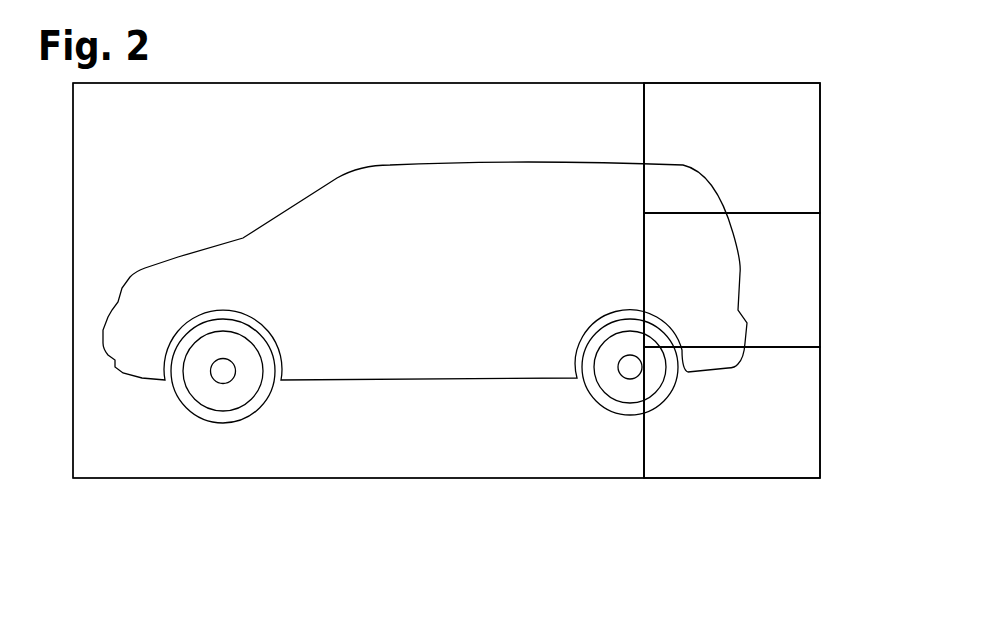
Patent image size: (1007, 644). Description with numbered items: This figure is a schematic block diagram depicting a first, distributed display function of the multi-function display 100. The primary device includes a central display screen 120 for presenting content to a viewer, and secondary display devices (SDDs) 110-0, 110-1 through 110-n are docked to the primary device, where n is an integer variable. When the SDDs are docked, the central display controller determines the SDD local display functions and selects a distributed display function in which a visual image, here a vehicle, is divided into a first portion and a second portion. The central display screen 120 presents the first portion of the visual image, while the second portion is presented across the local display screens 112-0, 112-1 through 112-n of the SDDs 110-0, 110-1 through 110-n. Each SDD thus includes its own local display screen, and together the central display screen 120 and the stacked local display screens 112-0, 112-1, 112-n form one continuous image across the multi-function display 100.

The multi-function display 100 is at (660, 63).
The secondary display device 110-0 is at (822, 160).
The secondary display device 110-1 is at (822, 265).
The secondary display device 110-n is at (822, 397).
The local display screen 112-0 is at (810, 205).
The local display screen 112-1 is at (808, 338).
The local display screen 112-n is at (810, 469).
The central display screen 120 is at (633, 466).